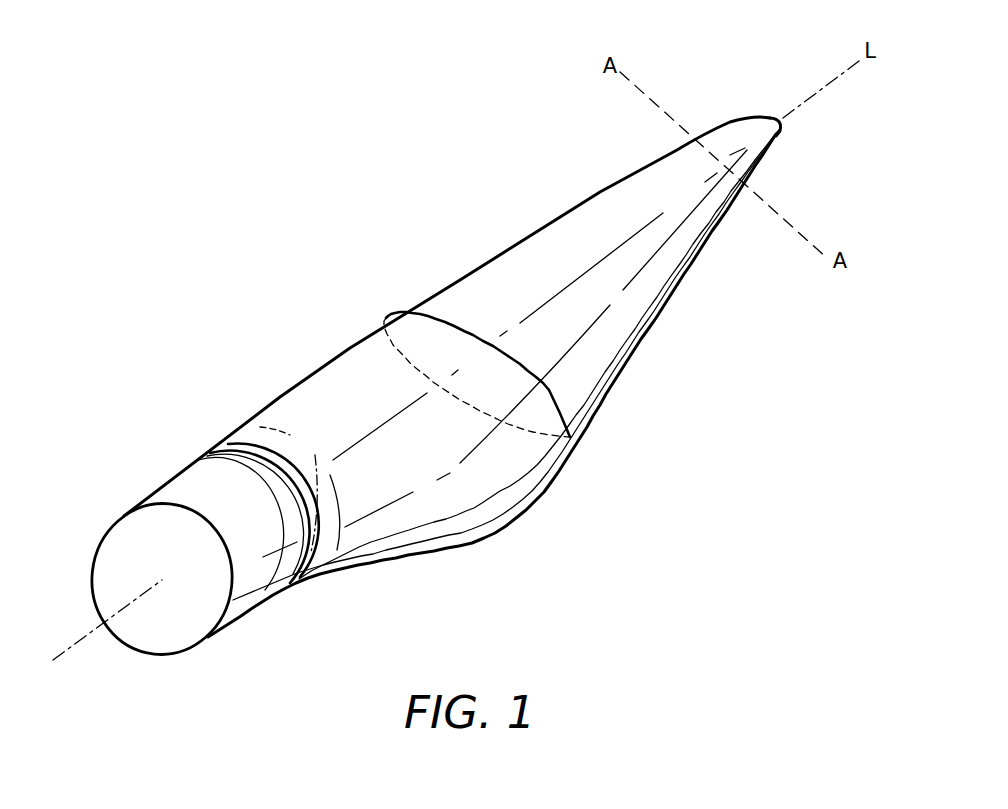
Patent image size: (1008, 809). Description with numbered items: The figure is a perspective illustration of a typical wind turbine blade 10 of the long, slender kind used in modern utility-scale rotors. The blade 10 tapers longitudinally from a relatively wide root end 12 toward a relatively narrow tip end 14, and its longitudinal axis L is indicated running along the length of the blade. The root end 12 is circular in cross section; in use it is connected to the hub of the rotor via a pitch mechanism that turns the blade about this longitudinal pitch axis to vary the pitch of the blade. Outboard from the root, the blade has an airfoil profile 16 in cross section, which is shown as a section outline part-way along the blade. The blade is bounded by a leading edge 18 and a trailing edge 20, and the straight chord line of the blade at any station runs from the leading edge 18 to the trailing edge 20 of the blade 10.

The wind turbine blade 10 is at (357, 193).
The root end 12 is at (137, 634).
The tip end 14 is at (794, 167).
The airfoil profile 16 is at (412, 332).
The leading edge 18 is at (328, 366).
The trailing edge 20 is at (624, 358).